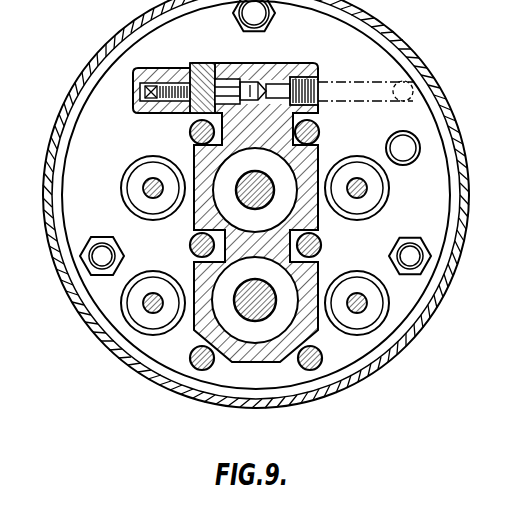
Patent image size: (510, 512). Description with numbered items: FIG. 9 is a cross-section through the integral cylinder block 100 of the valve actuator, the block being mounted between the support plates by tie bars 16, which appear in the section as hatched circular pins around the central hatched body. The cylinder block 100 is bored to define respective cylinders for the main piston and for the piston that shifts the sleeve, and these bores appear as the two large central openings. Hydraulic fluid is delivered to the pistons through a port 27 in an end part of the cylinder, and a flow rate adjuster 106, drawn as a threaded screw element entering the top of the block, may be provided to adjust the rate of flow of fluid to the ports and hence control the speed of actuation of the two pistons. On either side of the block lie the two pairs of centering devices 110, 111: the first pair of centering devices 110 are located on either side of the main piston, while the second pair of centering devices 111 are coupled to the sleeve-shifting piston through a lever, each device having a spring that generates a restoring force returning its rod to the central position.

The tie bars 16 is at (190, 133).
The port 27 is at (241, 63).
The cylinder block 100 is at (207, 66).
The flow rate adjuster 106 is at (251, 63).
The centering devices 110 is at (123, 200).
The centering devices 111 is at (130, 326).